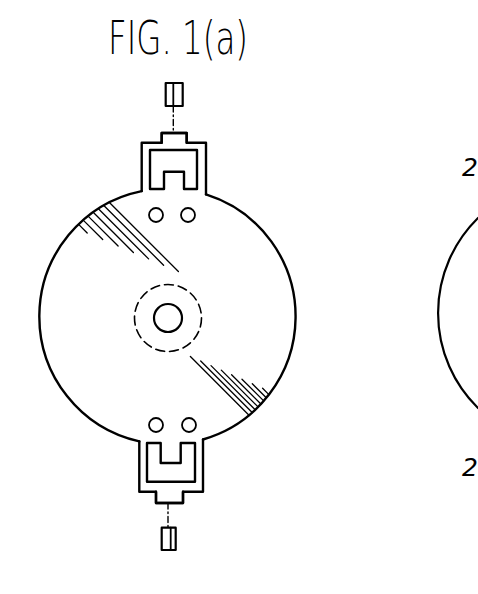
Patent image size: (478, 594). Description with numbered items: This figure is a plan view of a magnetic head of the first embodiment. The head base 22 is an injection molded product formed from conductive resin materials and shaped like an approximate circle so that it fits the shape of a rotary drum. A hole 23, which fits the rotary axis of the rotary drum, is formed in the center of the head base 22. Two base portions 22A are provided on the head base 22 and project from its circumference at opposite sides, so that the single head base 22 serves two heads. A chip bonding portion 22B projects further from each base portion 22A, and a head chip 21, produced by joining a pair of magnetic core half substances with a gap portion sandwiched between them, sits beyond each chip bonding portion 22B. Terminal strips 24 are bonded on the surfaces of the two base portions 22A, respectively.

The head chip 21 is at (183, 95).
The head base 22 is at (268, 242).
The base portion 22A is at (142, 170).
The chip bonding portion 22B is at (162, 135).
The hole 23 is at (170, 318).
The terminal strip 24 is at (192, 172).